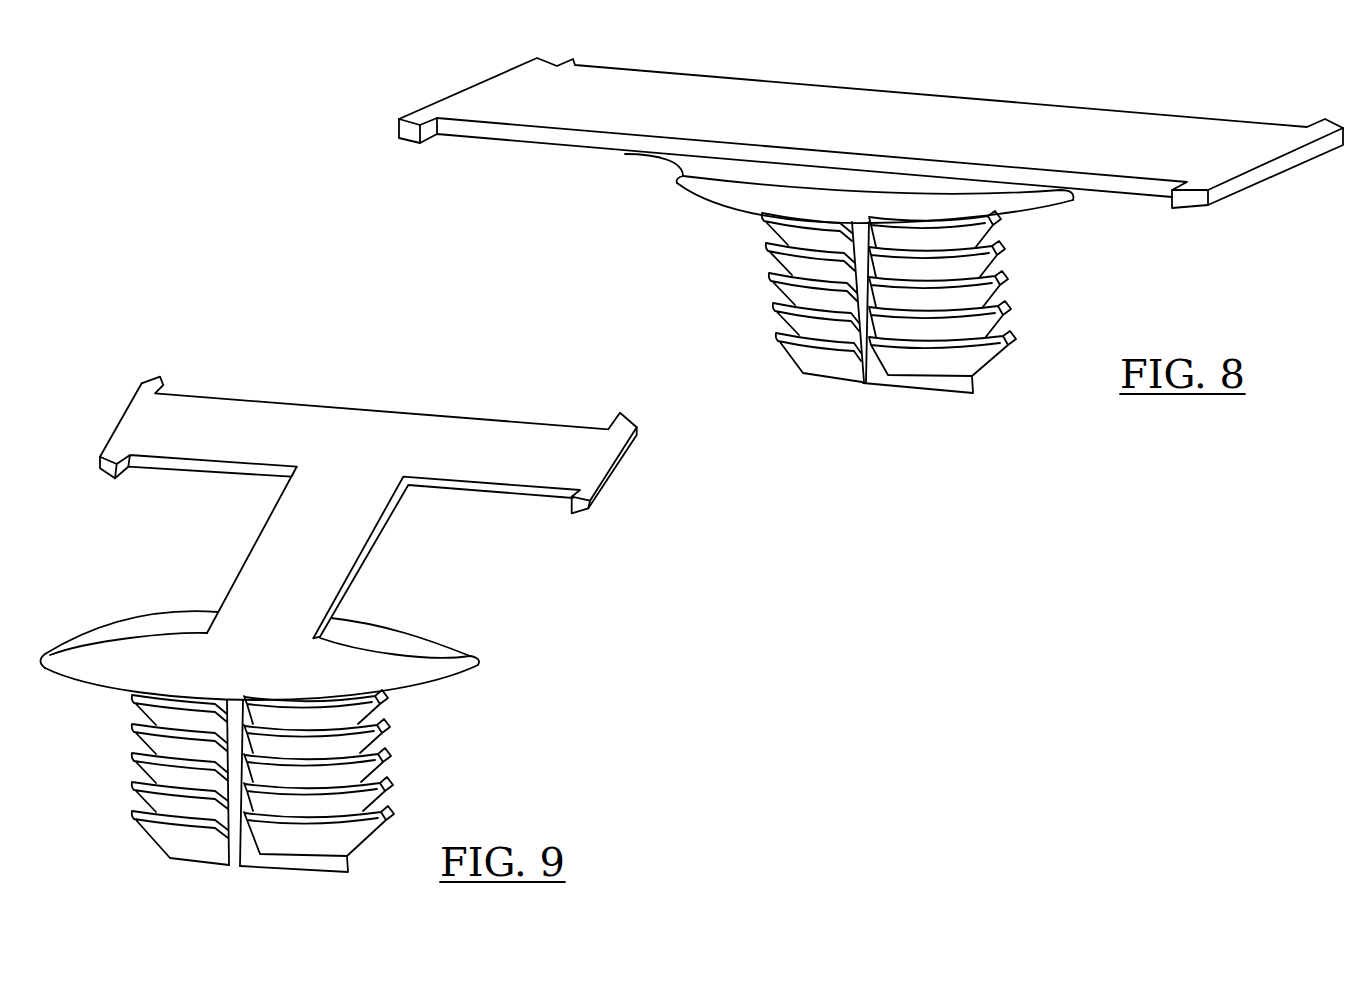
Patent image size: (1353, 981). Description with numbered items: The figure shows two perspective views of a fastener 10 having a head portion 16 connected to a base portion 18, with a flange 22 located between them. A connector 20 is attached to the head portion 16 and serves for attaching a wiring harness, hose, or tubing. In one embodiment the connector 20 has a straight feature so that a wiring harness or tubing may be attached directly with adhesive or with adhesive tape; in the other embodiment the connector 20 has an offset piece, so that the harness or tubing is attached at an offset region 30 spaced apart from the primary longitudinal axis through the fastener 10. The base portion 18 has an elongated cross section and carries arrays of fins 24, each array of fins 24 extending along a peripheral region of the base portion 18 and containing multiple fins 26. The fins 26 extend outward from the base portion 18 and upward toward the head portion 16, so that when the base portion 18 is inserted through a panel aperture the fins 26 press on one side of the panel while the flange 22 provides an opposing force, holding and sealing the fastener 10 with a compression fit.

In FIG. 8, the fastener 10 is at (871, 241).
In FIG. 8, the head portion 16 is at (871, 120).
In FIG. 8, the base portion 18 is at (935, 331).
In FIG. 9, the base portion 18 is at (312, 810).
In FIG. 8, the connector 20 is at (871, 120).
In FIG. 9, the connector 20 is at (339, 536).
In FIG. 8, the flange 22 is at (878, 202).
In FIG. 9, the flange 22 is at (285, 672).
In FIG. 8, the array of fins 24 is at (889, 331).
In FIG. 9, the array of fins 24 is at (263, 810).
In FIG. 8, the fin 26 is at (963, 282).
In FIG. 9, the fin 26 is at (345, 762).
In FIG. 9, the offset region 30 is at (368, 488).